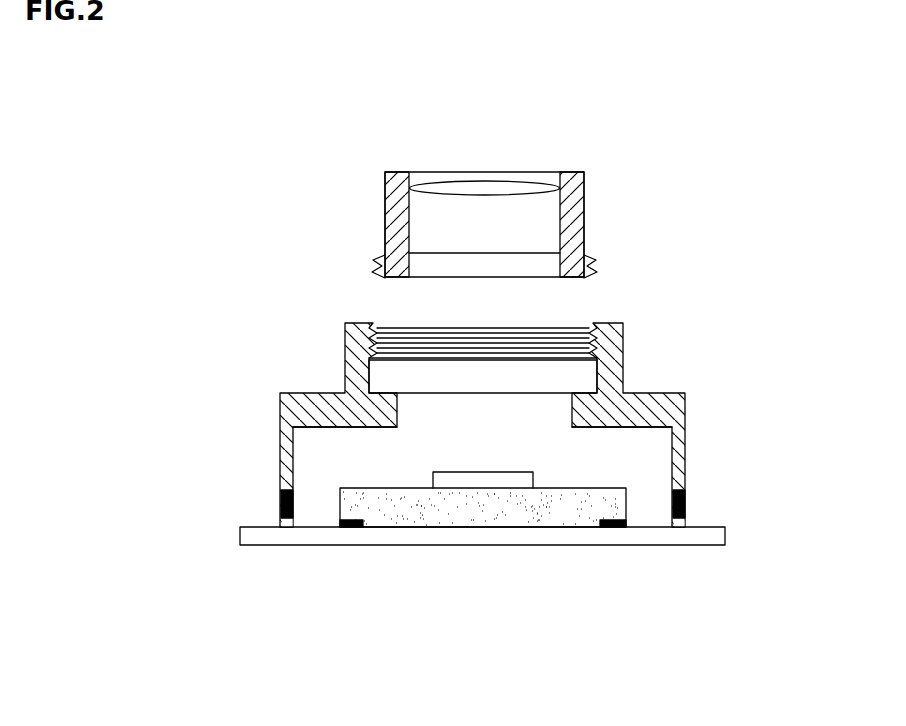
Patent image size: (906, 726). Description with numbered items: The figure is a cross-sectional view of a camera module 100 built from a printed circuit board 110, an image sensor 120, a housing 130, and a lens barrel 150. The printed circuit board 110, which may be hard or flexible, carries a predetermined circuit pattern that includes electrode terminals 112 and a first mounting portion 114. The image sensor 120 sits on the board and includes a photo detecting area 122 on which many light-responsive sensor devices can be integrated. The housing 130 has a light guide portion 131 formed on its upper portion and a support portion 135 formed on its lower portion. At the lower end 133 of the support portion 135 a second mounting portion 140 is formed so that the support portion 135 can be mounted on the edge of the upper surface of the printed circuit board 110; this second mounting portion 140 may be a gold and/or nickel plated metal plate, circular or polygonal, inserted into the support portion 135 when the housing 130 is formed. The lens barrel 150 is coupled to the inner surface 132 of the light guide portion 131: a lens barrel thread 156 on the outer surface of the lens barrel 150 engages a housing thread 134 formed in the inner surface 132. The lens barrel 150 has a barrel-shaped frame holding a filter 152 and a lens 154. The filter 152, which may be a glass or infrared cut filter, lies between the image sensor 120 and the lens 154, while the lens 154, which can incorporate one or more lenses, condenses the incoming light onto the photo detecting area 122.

The camera module 100 is at (781, 119).
The printed circuit board 110 is at (558, 533).
The electrode terminals 112 is at (351, 527).
The first mounting portion 114 is at (673, 527).
The image sensor 120 is at (483, 510).
The photo detecting area 122 is at (517, 480).
The housing 130 is at (459, 397).
The light guide portion 131 is at (345, 352).
The inner surface 132 is at (563, 378).
The lower end 133 is at (687, 505).
The housing thread 134 is at (575, 335).
The support portion 135 is at (688, 406).
The second mounting portion 140 is at (281, 510).
The lens barrel 150 is at (396, 222).
The filter 152 is at (518, 257).
The lens 154 is at (481, 186).
The lens barrel thread 156 is at (378, 262).